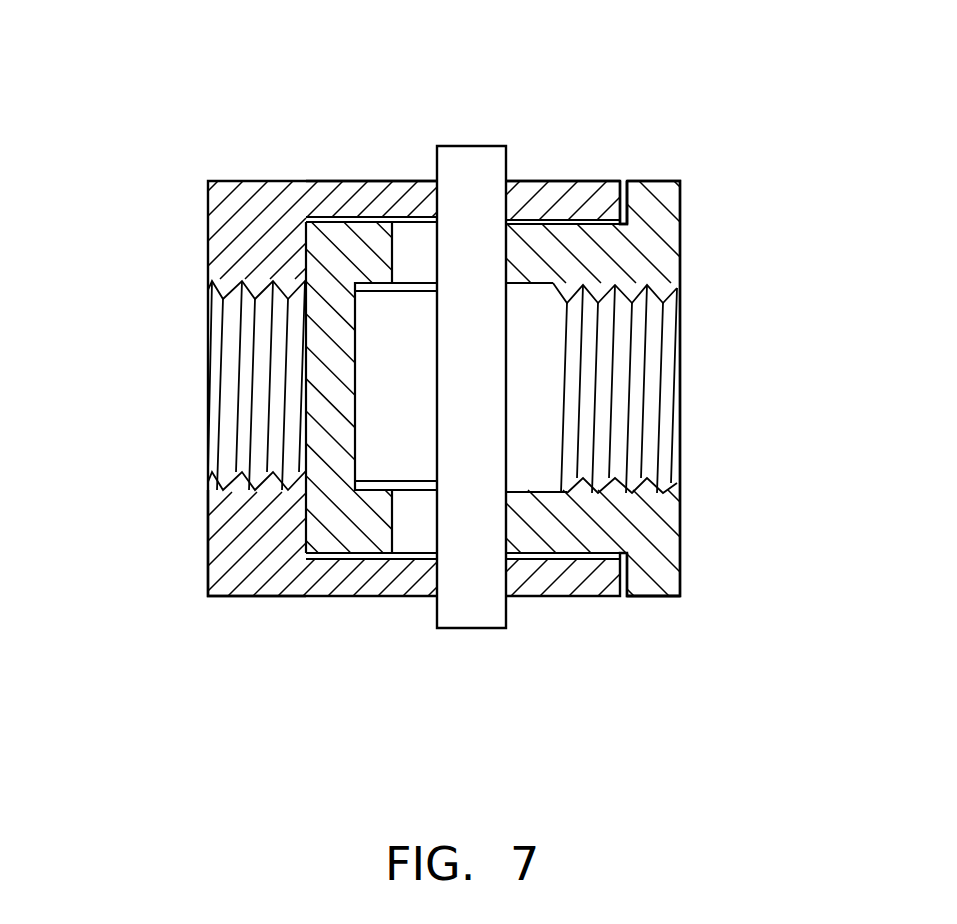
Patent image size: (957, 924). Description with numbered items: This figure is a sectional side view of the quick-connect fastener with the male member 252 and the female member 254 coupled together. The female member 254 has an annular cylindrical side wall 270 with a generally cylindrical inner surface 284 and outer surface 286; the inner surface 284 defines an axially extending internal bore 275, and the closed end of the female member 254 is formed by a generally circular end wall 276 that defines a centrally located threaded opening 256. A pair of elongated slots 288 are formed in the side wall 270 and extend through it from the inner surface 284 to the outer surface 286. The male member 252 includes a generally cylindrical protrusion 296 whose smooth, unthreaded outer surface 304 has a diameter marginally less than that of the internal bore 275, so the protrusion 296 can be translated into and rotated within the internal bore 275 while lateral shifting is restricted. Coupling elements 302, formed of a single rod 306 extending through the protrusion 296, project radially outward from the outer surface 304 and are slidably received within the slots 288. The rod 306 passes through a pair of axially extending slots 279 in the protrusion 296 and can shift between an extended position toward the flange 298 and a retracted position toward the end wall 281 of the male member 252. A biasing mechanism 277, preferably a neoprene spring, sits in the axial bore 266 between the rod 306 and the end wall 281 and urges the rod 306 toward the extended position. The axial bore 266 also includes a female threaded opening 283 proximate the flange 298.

The male member 252 is at (662, 180).
The female member 254 is at (262, 180).
The threaded opening 256 is at (265, 340).
The axial bore 266 is at (550, 358).
The side wall 270 is at (548, 183).
The internal bore 275 is at (328, 558).
The end wall 276 is at (248, 530).
The biasing mechanism 277 is at (385, 422).
The axially extending slots 279 is at (408, 250).
The end wall 281 is at (330, 353).
The female threaded opening 283 is at (642, 368).
The inner surface 284 is at (325, 217).
The outer surface 286 is at (607, 183).
The elongated slots 288 is at (417, 190).
The protrusion 296 is at (548, 530).
The flange 298 is at (657, 598).
The coupling elements 302 is at (507, 160).
The outer surface 304 is at (530, 555).
The rod 306 is at (478, 410).